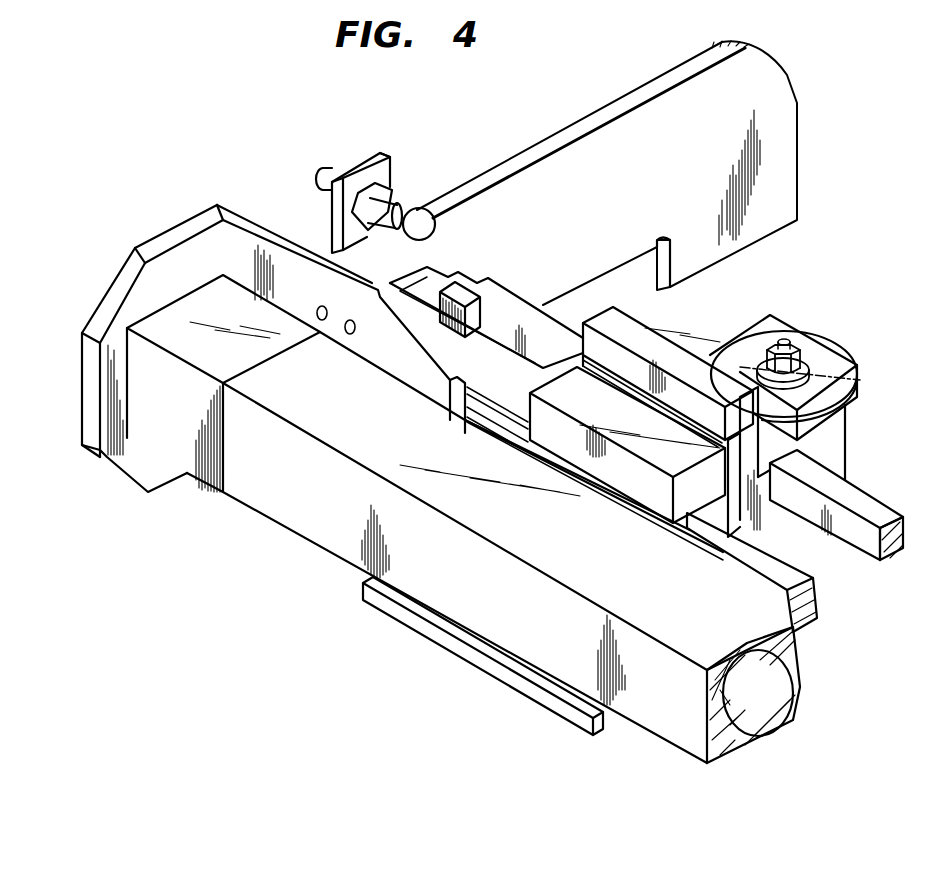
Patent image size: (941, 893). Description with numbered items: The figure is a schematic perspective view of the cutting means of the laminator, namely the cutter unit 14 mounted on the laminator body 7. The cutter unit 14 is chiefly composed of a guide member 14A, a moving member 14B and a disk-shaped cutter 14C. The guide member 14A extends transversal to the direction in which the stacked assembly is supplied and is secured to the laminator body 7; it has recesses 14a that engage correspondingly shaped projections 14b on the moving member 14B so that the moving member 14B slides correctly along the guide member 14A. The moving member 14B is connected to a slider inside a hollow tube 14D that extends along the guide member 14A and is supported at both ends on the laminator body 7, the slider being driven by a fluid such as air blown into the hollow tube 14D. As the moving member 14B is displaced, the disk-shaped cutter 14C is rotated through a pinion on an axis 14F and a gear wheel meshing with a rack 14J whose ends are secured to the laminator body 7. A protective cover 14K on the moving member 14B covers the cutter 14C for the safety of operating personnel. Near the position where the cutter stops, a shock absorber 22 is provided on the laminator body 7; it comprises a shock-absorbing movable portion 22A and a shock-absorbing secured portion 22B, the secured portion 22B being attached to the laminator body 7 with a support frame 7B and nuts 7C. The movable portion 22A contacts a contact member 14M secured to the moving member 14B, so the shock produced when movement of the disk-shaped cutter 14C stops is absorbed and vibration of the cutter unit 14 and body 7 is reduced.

The laminator body 7 is at (592, 148).
The support frame 7B is at (363, 162).
The nuts 7C is at (392, 187).
The cutter unit 14 is at (487, 136).
The guide member 14A is at (813, 613).
The moving member 14B is at (840, 442).
The disk-shaped cutter 14C is at (837, 347).
The hollow tube 14D is at (642, 707).
The axis 14F is at (783, 342).
The rack 14J is at (517, 300).
The protective cover 14K is at (860, 390).
The contact member 14M is at (670, 353).
The recesses (or projections) 14a is at (800, 577).
The projections (or recesses) 14b is at (688, 517).
The shock absorber 22 is at (403, 200).
The shock-absorbing movable portion 22A is at (437, 228).
The shock-absorbing secured portion 22B is at (322, 170).